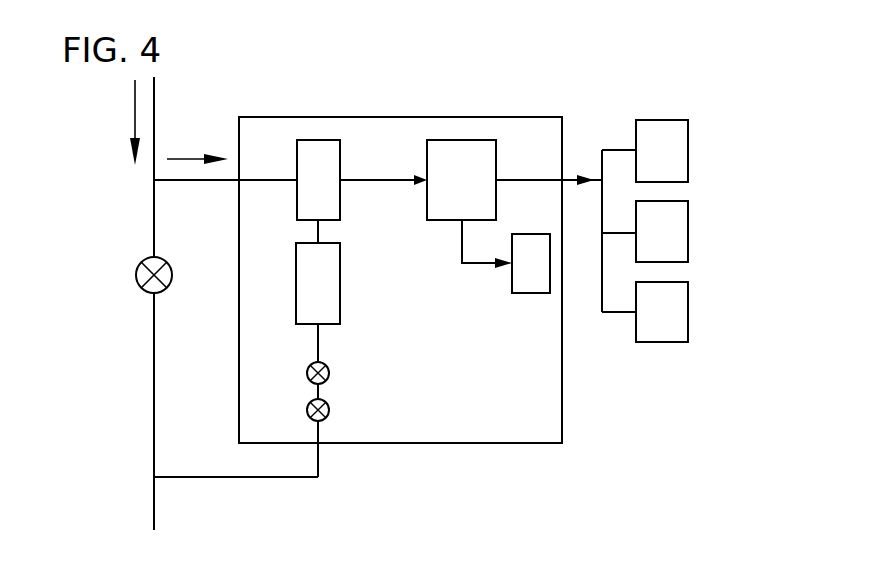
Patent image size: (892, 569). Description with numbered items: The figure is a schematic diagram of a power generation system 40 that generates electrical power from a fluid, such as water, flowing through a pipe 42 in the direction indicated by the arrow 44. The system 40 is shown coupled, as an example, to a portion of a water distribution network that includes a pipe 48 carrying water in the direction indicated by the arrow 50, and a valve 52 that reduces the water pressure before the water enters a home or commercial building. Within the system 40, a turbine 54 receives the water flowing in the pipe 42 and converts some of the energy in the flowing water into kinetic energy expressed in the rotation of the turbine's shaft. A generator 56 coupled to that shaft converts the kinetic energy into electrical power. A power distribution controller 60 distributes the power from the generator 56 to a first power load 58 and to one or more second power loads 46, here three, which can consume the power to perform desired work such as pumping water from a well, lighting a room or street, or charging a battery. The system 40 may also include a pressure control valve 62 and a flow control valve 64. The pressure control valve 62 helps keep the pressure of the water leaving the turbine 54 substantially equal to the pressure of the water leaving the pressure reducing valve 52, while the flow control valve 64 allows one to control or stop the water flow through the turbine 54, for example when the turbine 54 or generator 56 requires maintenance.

The power generation system 40 is at (500, 95).
The pipe 42 is at (268, 181).
The arrow 44 is at (188, 159).
The second power loads 46 is at (688, 149).
The pipe 48 is at (154, 210).
The arrow 50 is at (135, 113).
The valve 52 is at (142, 291).
The turbine 54 is at (340, 275).
The generator 56 is at (318, 140).
The first power load 58 is at (527, 293).
The power distribution controller 60 is at (450, 140).
The pressure control valve 62 is at (329, 367).
The flow control valve 64 is at (329, 404).